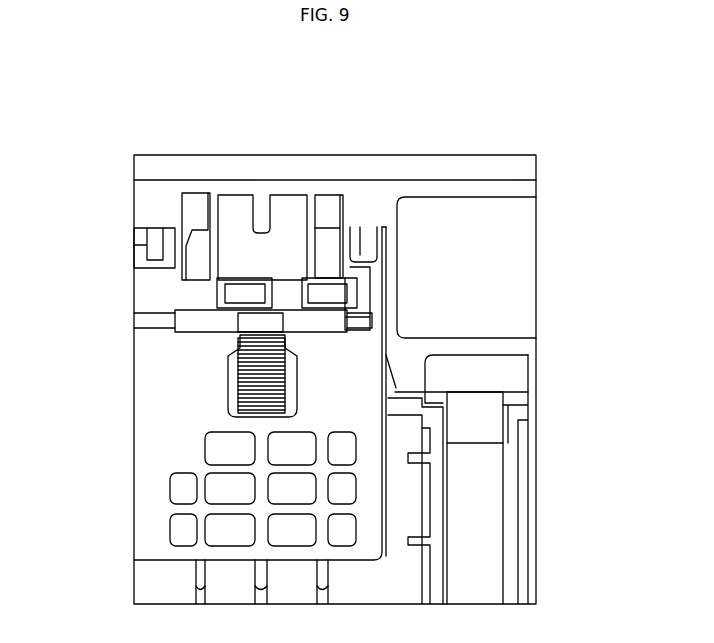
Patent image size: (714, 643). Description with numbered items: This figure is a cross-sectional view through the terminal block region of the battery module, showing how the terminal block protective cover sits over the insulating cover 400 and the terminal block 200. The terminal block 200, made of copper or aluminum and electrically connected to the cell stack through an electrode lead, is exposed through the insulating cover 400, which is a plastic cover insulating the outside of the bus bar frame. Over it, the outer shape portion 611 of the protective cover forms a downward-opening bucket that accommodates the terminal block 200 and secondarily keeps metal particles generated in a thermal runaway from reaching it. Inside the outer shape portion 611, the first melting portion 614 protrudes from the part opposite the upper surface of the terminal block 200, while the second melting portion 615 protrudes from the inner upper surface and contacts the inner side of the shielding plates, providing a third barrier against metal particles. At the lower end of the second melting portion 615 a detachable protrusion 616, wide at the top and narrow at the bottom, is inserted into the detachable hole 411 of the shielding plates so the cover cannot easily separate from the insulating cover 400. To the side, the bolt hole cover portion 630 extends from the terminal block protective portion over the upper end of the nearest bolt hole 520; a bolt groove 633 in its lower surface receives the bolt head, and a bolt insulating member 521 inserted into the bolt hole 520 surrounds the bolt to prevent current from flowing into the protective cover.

The terminal block 200 is at (190, 325).
The insulating cover 400 is at (157, 453).
The detachable hole 411 is at (178, 297).
The bolt hole 520 is at (483, 522).
The bolt insulating member 521 is at (518, 398).
The outer shape portion 611 is at (152, 225).
The first melting portion 614 is at (313, 223).
The second melting portion 615 is at (192, 230).
The detachable protrusion 616 is at (172, 279).
The bolt hole cover portion 630 is at (502, 240).
The bolt groove 633 is at (490, 370).